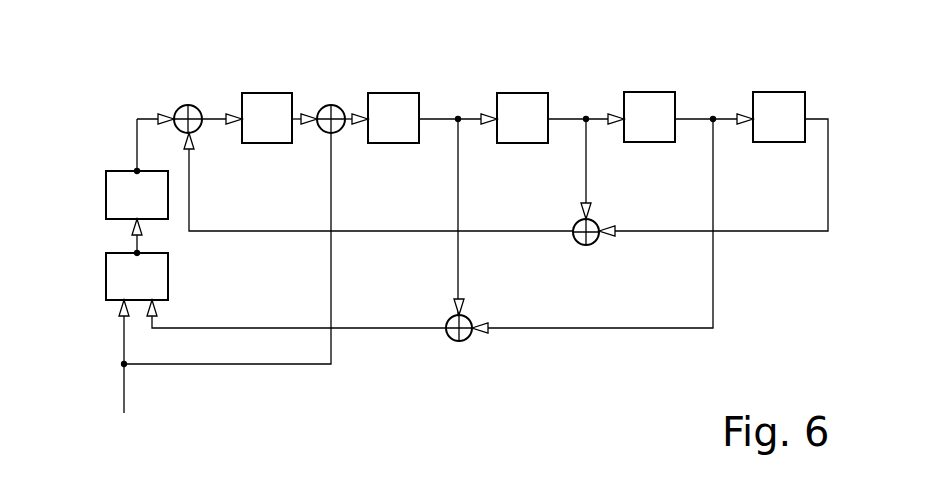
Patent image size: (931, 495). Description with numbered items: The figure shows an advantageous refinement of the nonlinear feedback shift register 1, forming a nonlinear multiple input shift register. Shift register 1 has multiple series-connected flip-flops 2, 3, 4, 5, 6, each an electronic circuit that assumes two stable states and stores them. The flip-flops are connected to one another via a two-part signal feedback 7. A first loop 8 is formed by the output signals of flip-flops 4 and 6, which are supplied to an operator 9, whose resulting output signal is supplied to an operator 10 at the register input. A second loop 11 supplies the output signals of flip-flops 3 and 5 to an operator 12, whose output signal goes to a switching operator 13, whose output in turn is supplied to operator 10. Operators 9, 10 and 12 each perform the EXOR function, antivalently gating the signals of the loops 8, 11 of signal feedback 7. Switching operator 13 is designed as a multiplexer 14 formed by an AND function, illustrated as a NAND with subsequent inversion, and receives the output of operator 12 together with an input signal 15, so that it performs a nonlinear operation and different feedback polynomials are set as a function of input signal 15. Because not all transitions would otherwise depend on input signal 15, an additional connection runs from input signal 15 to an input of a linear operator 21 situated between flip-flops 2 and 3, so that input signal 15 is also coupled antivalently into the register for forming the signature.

The nonlinear feedback shift register 1 is at (122, 77).
The flip-flop 2 is at (267, 93).
The flip-flop 3 is at (393, 93).
The flip-flop 4 is at (521, 93).
The flip-flop 5 is at (648, 92).
The flip-flop 6 is at (778, 92).
The signal feedback 7 is at (720, 236).
The first loop 8 is at (828, 196).
The operator 9 is at (586, 246).
The operator 10 is at (189, 105).
The second loop 11 is at (683, 328).
The operator 12 is at (459, 342).
The switching operator 13 is at (110, 308).
The multiplexer 14 is at (248, 248).
The input signal 15 is at (124, 391).
The operator 21 is at (332, 105).